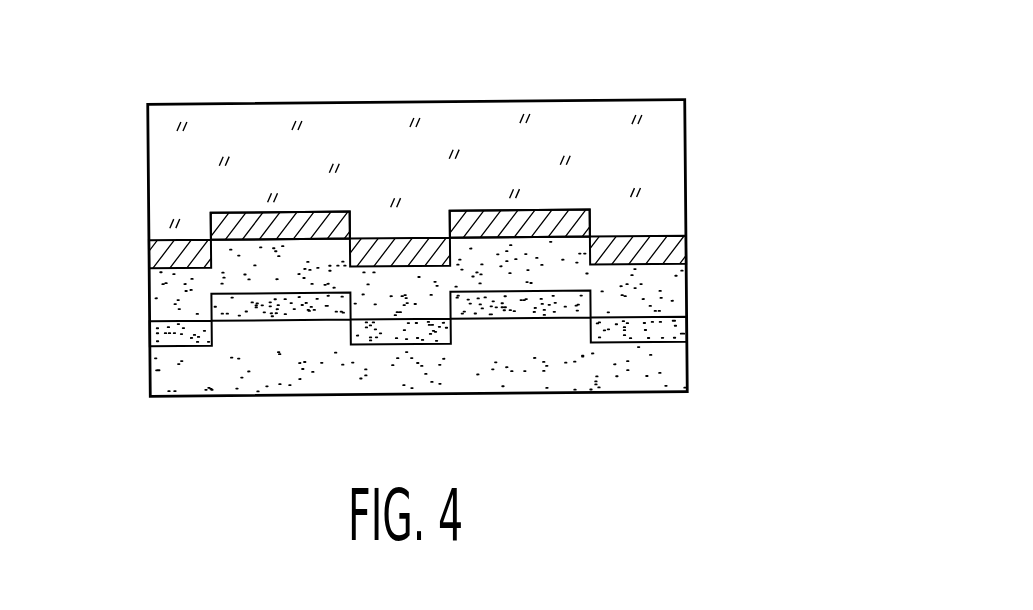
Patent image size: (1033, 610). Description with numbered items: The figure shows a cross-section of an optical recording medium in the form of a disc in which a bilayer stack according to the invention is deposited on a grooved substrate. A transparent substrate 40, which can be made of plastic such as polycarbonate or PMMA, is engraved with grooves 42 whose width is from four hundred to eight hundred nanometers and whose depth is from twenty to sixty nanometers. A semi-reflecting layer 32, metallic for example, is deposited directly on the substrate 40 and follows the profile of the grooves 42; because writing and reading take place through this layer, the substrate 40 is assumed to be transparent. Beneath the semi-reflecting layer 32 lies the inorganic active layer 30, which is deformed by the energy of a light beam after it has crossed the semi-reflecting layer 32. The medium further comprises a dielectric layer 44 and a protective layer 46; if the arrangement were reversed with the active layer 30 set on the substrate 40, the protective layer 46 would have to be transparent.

The transparent substrate 40 is at (668, 152).
The grooves 42 is at (258, 222).
The semi-reflecting layer 32 is at (668, 247).
The active layer 30 is at (167, 305).
The dielectric layer 44 is at (678, 328).
The protective layer 46 is at (167, 378).